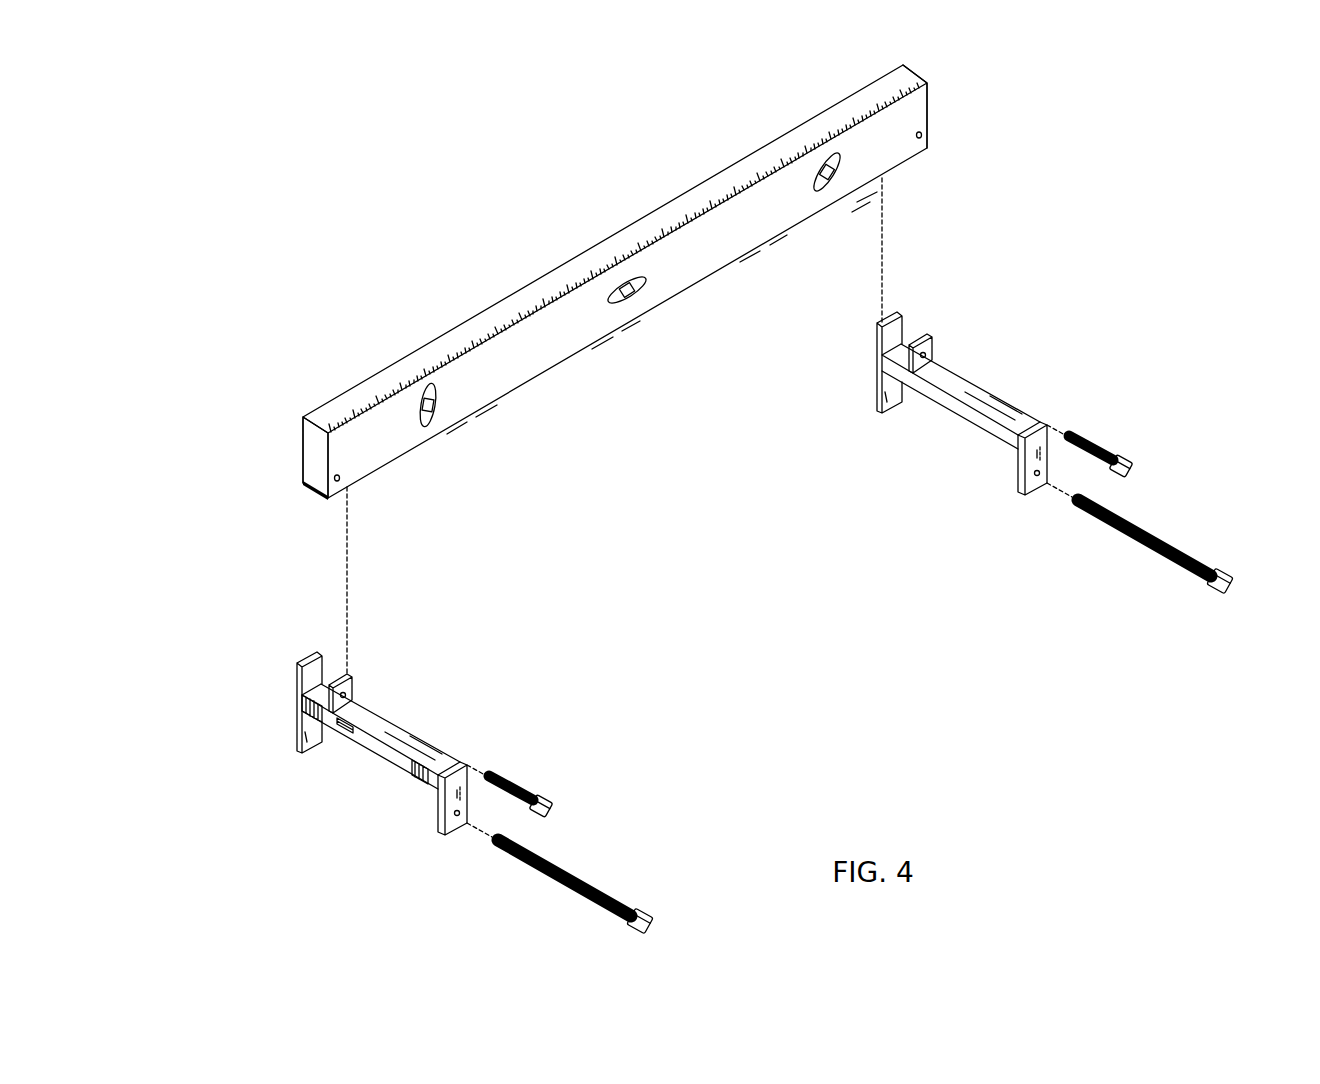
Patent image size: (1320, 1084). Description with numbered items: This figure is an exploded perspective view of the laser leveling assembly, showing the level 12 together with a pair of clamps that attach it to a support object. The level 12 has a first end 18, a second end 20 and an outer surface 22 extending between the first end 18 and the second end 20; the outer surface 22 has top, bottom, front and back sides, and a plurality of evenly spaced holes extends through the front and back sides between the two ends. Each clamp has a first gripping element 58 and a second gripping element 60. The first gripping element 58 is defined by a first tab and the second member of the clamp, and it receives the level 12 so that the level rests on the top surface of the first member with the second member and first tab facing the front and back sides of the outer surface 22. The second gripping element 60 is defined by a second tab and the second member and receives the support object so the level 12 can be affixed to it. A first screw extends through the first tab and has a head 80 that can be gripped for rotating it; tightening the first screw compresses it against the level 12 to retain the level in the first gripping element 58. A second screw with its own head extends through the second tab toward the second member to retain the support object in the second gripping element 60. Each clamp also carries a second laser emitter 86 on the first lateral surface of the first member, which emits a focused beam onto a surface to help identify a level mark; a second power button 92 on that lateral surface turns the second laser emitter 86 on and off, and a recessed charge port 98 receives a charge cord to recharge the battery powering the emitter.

The level 12 is at (632, 369).
The first end 18 is at (327, 458).
The second end 20 is at (927, 137).
The outer surface 22 is at (733, 223).
The first gripping element 58 is at (280, 657).
The second gripping element 60 is at (320, 684).
The head 80 is at (685, 830).
The second laser emitter 86 is at (269, 728).
The second power button 92 is at (378, 632).
The charge port 98 is at (435, 674).